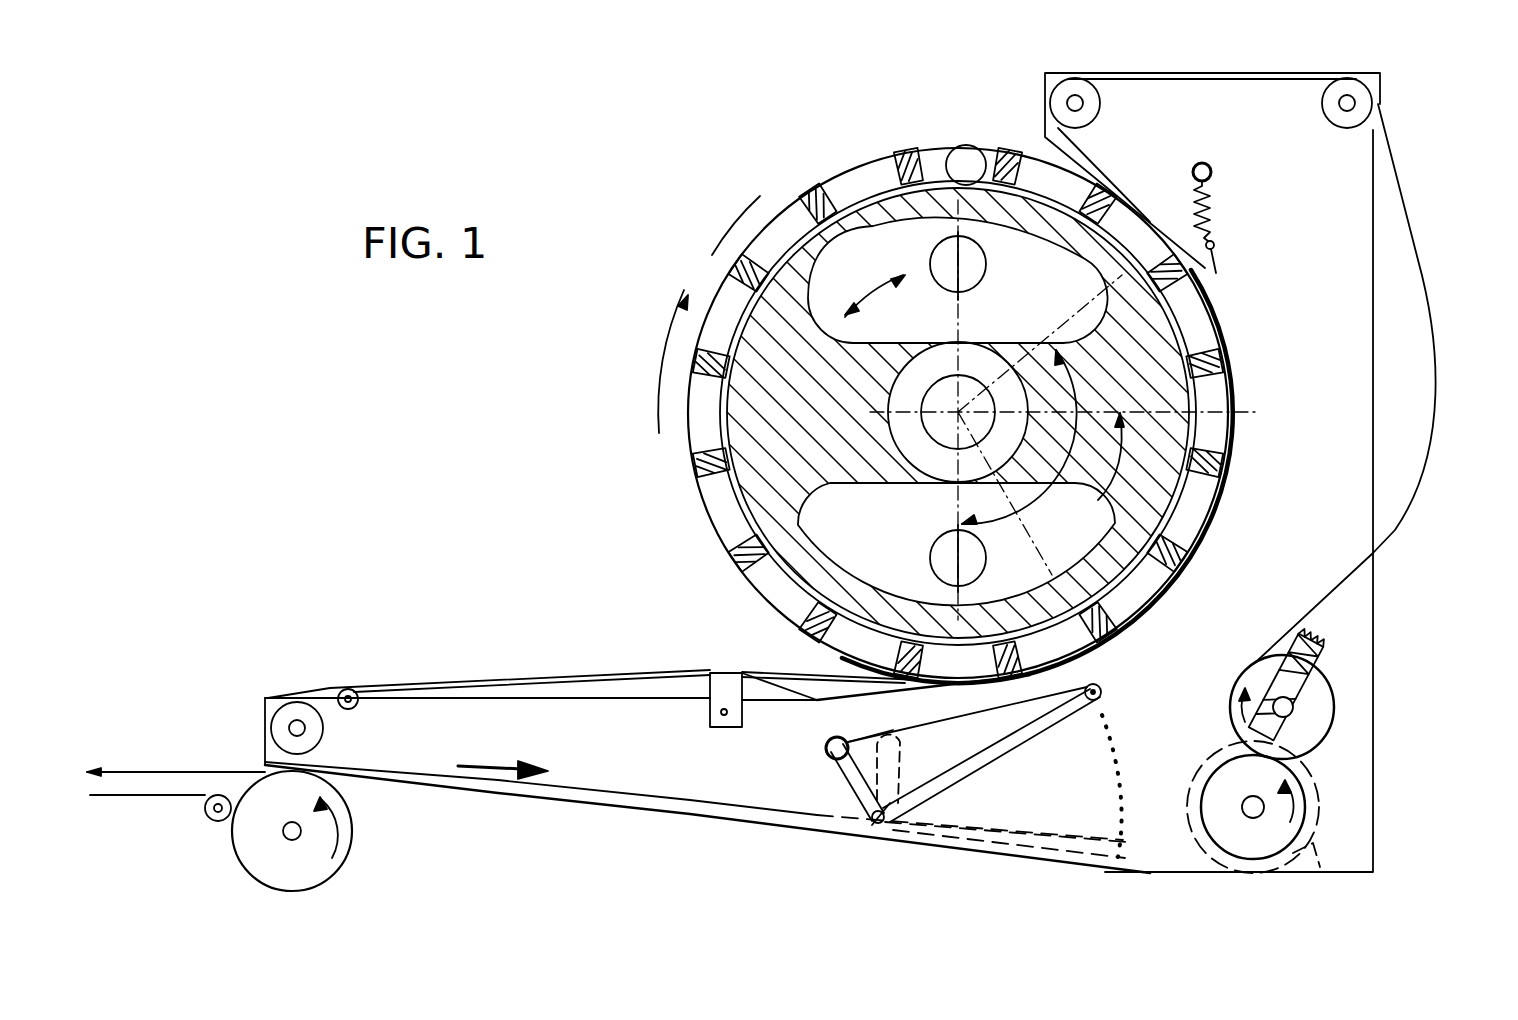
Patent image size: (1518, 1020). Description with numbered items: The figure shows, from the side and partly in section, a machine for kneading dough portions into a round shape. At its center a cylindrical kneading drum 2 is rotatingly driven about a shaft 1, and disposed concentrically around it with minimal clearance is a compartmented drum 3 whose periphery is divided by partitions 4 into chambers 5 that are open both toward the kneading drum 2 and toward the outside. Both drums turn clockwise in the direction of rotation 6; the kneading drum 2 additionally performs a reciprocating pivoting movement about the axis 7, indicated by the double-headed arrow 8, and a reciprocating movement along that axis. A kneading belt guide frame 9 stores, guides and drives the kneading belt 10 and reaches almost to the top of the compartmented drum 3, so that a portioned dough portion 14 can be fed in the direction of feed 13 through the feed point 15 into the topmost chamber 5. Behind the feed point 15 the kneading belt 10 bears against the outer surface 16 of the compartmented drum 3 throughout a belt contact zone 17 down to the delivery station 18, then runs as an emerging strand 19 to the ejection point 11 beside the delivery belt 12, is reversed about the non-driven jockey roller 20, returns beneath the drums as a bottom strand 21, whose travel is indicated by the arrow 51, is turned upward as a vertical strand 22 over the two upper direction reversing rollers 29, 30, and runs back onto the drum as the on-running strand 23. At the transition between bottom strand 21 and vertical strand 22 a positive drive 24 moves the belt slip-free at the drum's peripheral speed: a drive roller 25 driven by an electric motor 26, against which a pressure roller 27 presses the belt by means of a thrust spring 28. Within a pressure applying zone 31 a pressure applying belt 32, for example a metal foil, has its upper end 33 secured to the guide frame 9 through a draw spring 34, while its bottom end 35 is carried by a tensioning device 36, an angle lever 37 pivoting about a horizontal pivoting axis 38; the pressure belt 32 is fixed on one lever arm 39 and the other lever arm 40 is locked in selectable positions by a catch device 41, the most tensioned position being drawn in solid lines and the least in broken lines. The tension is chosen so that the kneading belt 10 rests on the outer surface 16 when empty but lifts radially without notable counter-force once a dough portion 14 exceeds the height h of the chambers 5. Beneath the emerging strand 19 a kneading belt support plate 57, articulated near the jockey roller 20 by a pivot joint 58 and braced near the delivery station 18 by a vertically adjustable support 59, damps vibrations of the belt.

The shaft 1 is at (968, 388).
The kneading drum 2 is at (875, 215).
The compartmented drum 3 is at (812, 190).
The partitions 4 is at (808, 202).
The chambers 5 is at (1005, 42).
The direction of rotation 6 is at (651, 361).
The axis 7 is at (956, 405).
The double-headed arrow 8 is at (875, 284).
The kneading belt guide frame 9 is at (1316, 470).
The kneading belt 10 is at (1422, 248).
The ejection point 11 is at (255, 722).
The delivery belt 12 is at (140, 770).
The direction of feed 13 is at (965, 99).
The dough portion 14 is at (968, 160).
The feed point 15 is at (958, 146).
The outer surface 16 is at (713, 525).
The belt contact zone 17 is at (1052, 347).
The delivery station 18 is at (957, 687).
The emerging strand 19 is at (665, 670).
The jockey roller 20 is at (324, 730).
The bottom strand 21 is at (640, 802).
The vertical strand 22 is at (1440, 392).
The on-running strand 23 is at (1110, 178).
The positive drive 24 is at (1312, 760).
The drive roller 25 is at (1305, 807).
The electric motor 26 is at (1312, 843).
The pressure roller 27 is at (1334, 707).
The thrust spring 28 is at (1305, 657).
The upper direction reversing roller 29 is at (1322, 100).
The upper direction reversing roller 30 is at (1101, 100).
The pressure applying zone 31 is at (1040, 547).
The pressure applying belt 32 is at (1222, 305).
The upper end 33 is at (1215, 245).
The draw spring 34 is at (1213, 207).
The bottom end 35 is at (843, 722).
The tensioning device 36 is at (828, 752).
The angle lever 37 is at (878, 829).
The pivoting axis 38 is at (875, 826).
The lever arm 39 is at (860, 790).
The lever arm 40 is at (1025, 733).
The catch device 41 is at (1103, 692).
The conveying direction 51 is at (503, 752).
The kneading belt support plate 57 is at (569, 682).
The pivot joint 58 is at (358, 705).
The vertically adjustable support 59 is at (722, 686).
The height of the chambers h is at (740, 312).